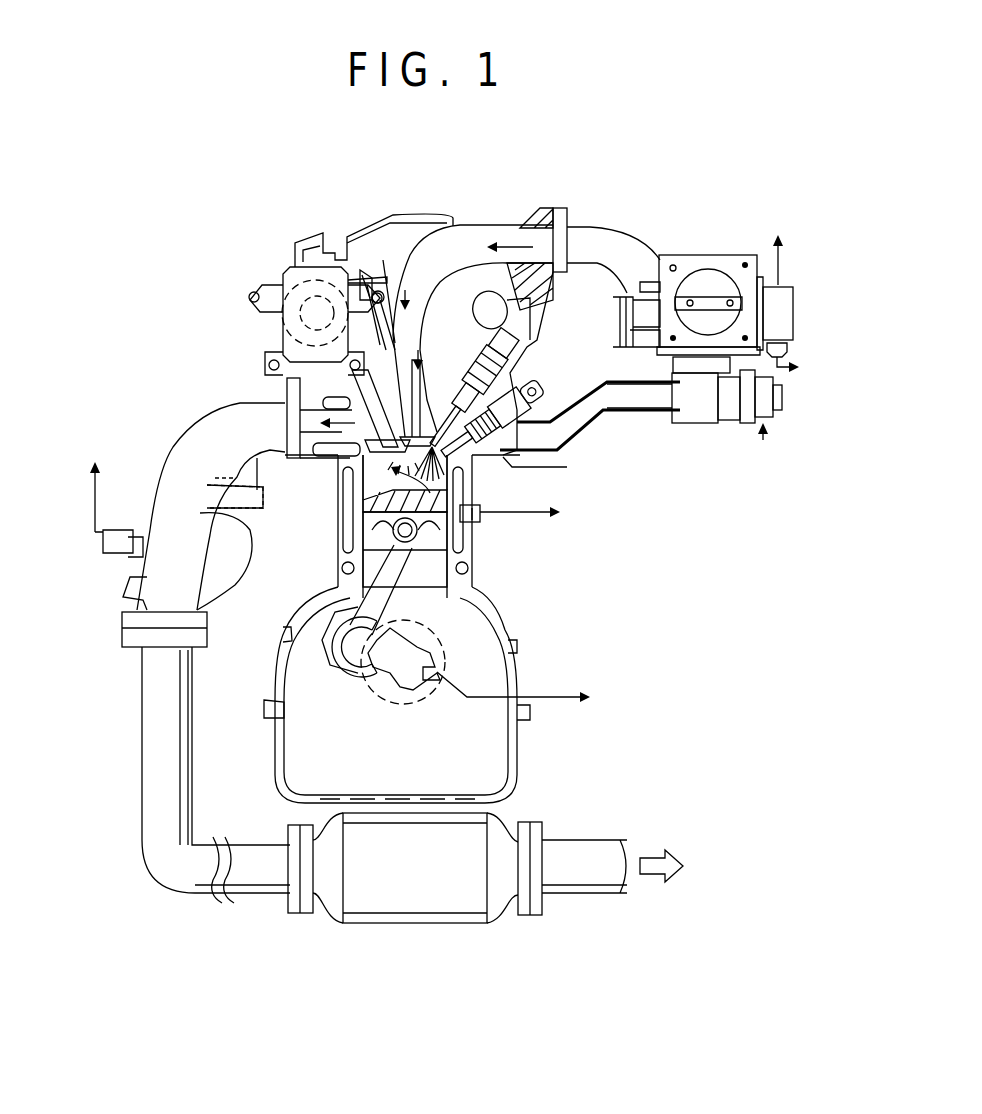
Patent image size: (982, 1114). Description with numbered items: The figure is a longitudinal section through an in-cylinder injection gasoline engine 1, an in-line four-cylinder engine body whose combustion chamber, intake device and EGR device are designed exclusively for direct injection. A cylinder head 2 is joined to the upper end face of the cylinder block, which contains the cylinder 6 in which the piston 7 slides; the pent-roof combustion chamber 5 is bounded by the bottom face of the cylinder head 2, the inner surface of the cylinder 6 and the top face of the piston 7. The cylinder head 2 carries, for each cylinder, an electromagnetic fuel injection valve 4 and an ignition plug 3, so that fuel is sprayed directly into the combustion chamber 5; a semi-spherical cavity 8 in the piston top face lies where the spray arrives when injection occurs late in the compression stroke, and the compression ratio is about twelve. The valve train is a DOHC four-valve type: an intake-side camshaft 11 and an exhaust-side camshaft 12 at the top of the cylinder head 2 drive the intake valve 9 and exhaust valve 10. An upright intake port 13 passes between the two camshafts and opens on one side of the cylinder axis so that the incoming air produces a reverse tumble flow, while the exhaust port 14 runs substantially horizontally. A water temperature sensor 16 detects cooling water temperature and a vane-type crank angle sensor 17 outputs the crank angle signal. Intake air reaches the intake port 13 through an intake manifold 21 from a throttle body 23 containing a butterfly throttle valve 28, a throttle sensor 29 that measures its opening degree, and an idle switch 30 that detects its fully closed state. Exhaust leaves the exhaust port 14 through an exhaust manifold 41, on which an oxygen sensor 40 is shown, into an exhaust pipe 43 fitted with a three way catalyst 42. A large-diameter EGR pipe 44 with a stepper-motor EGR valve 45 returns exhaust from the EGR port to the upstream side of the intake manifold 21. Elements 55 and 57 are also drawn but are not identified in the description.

The engine body 1 is at (553, 597).
The cylinder head 2 is at (512, 372).
The ignition plug 3 is at (368, 285).
The fuel injection valve 4 is at (551, 472).
The combustion chamber 5 is at (345, 483).
The cylinder 6 is at (470, 545).
The piston 7 is at (345, 523).
The semi-spherical cavity 8 is at (463, 480).
The intake valve 9 is at (517, 383).
The exhaust valve 10 is at (300, 405).
The intake-side camshaft 11 is at (498, 307).
The exhaust-side camshaft 12 is at (283, 278).
The intake port 13 is at (410, 335).
The exhaust port 14 is at (313, 427).
The water temperature sensor 16 is at (483, 522).
The crank angle sensor 17 is at (440, 666).
The intake manifold 21 is at (595, 225).
The throttle body 23 is at (735, 257).
The throttle valve 28 is at (708, 270).
The throttle sensor 29 is at (790, 303).
The idle switch 30 is at (790, 345).
The oxygen sensor 40 is at (120, 527).
The exhaust manifold 41 is at (187, 433).
The three way catalyst 42 is at (423, 907).
The exhaust pipe 43 is at (180, 755).
The EGR pipe 44 is at (628, 402).
The EGR valve 45 is at (693, 418).
The EGR passage 55 is at (283, 343).
The air injection passage 57 is at (557, 402).